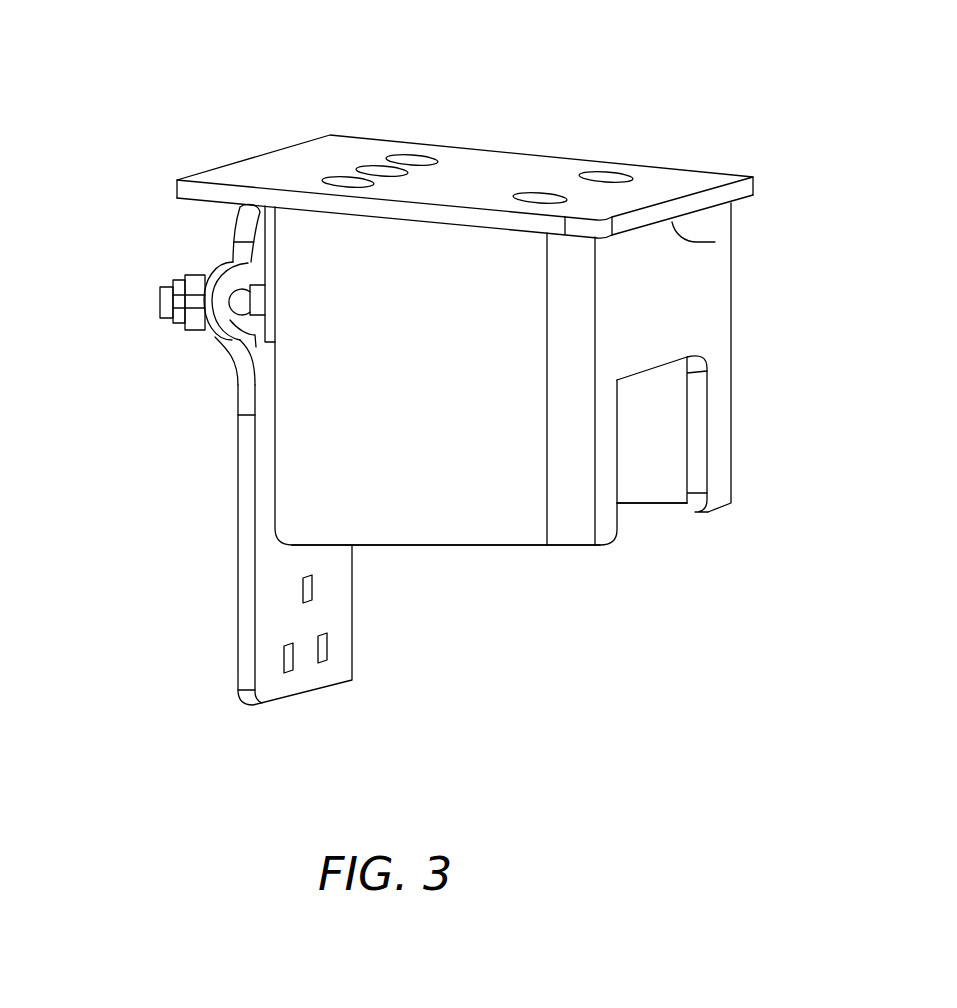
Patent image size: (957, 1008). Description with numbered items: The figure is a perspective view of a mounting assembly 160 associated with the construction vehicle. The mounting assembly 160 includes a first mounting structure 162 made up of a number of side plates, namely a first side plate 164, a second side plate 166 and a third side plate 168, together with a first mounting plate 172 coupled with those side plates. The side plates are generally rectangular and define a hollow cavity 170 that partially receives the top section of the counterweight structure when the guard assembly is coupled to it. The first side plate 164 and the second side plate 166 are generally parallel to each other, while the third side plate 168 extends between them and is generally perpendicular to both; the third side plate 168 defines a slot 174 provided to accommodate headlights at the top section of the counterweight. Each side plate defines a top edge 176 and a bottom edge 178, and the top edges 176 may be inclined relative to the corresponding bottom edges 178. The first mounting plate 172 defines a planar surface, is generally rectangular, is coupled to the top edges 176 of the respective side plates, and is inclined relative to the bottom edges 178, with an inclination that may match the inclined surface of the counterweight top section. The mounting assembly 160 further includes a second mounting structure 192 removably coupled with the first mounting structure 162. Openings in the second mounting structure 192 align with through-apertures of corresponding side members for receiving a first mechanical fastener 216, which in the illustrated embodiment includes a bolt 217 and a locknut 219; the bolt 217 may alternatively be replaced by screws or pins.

The mounting assembly 160 is at (845, 94).
The first mounting structure 162 is at (465, 133).
The first side plate 164 is at (398, 480).
The second side plate 166 is at (738, 477).
The third side plate 168 is at (572, 434).
The hollow cavity 170 is at (639, 456).
The first mounting plate 172 is at (455, 190).
The slot 174 is at (703, 474).
The top edge 176 is at (715, 242).
The bottom edge 178 is at (488, 540).
The second mounting structure 192 is at (205, 558).
The first mechanical fastener 216 is at (152, 308).
The bolt 217 is at (238, 333).
The locknut 219 is at (207, 305).